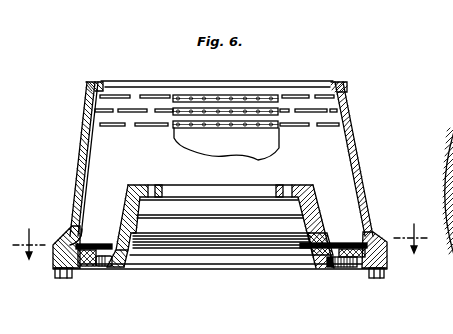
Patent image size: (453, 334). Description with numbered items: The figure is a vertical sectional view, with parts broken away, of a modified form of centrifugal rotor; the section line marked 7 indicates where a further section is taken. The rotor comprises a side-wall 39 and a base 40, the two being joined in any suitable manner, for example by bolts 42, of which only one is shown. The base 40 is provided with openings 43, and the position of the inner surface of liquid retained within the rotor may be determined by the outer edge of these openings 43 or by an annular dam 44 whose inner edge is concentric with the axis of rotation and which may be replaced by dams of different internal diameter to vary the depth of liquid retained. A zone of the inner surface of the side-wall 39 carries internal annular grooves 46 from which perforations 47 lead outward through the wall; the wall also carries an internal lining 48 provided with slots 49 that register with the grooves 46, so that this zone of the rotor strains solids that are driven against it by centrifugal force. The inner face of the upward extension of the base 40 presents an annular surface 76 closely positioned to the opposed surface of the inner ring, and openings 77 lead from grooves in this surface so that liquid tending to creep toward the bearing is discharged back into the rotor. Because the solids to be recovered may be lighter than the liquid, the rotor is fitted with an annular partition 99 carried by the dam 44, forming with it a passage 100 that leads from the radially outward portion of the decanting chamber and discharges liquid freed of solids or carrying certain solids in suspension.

The side-wall 39 is at (76, 178).
The base 40 is at (56, 265).
The bolts 42 is at (380, 275).
The openings 43 is at (100, 267).
The annular dam 44 is at (70, 232).
The internal annular grooves 46 is at (258, 118).
The perforations 47 is at (349, 101).
The internal lining 48 is at (95, 156).
The slots 49 is at (150, 127).
The annular surface 76 is at (212, 251).
The openings 77 is at (320, 242).
The annular partition 99 is at (97, 244).
The passage 100 is at (84, 267).
The section line 7 is at (221, 241).